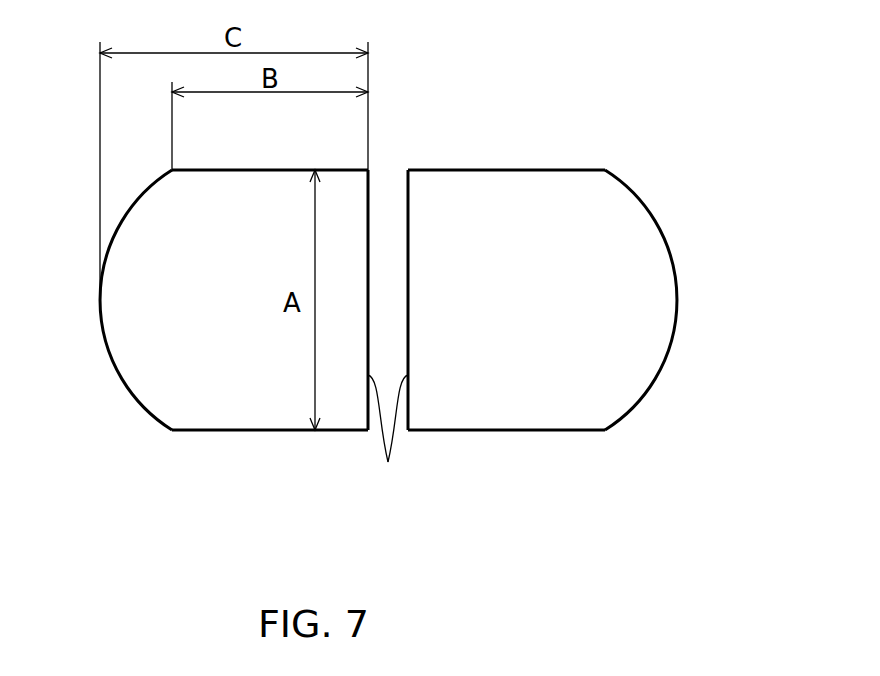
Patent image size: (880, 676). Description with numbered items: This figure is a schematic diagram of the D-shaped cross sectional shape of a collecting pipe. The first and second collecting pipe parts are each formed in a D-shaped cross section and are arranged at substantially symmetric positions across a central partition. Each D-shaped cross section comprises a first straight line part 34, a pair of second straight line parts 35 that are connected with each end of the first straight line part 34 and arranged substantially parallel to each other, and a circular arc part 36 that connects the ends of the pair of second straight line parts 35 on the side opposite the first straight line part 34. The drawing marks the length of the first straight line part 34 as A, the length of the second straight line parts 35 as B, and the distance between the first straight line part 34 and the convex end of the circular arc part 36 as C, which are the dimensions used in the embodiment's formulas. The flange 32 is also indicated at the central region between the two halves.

The flange 32 is at (387, 222).
The first straight line part 34 is at (388, 437).
The second straight line parts 35 is at (235, 170).
The circular arc part 36 is at (100, 297).